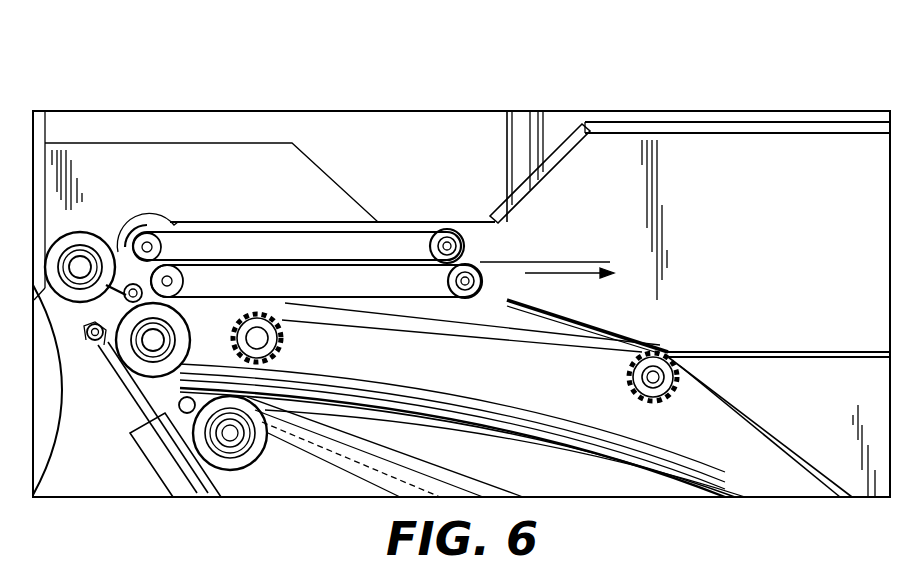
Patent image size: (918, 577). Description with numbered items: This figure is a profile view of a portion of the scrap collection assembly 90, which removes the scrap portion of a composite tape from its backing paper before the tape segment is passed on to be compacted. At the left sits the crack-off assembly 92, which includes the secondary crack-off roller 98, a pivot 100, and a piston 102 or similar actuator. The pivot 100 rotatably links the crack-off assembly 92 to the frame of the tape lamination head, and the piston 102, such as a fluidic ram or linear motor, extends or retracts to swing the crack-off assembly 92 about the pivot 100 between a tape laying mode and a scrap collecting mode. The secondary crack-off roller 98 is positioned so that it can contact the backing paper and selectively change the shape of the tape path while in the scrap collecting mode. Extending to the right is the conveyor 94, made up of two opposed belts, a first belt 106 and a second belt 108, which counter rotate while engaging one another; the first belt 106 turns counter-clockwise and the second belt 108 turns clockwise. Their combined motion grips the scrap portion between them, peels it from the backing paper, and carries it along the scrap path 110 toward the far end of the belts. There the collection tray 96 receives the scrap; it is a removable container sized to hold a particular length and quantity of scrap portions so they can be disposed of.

The scrap collection assembly 90 is at (708, 70).
The crack-off assembly 92 is at (88, 420).
The conveyor 94 is at (299, 223).
The collection tray 96 is at (784, 323).
The secondary crack-off roller 98 is at (110, 303).
The pivot 100 is at (170, 324).
The piston 102 is at (122, 396).
The first belt 106 is at (305, 230).
The second belt 108 is at (464, 266).
The scrap path 110 is at (566, 250).